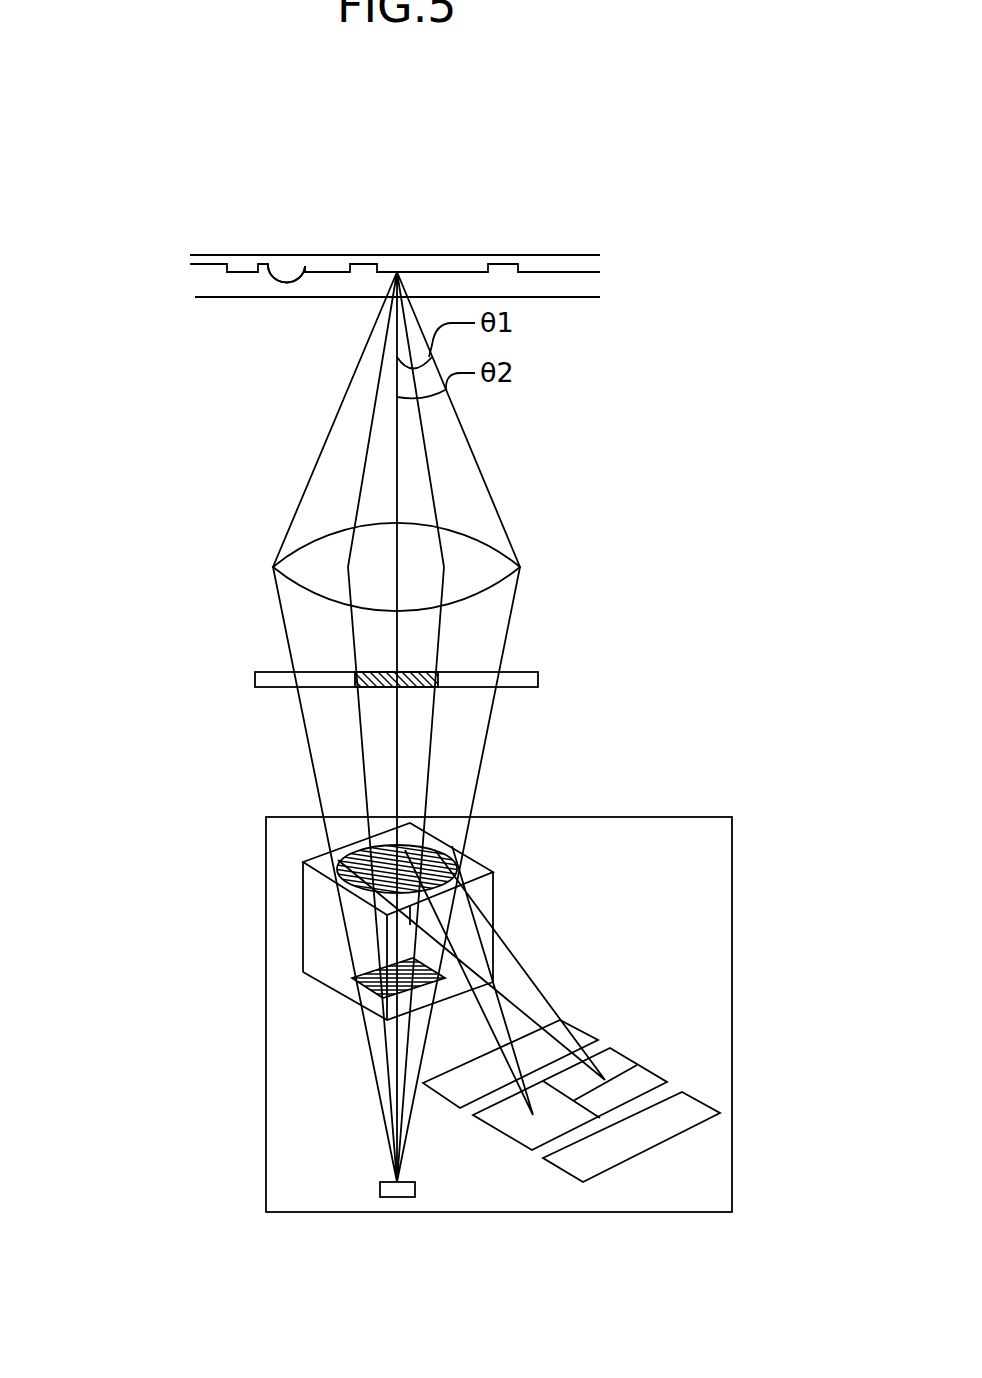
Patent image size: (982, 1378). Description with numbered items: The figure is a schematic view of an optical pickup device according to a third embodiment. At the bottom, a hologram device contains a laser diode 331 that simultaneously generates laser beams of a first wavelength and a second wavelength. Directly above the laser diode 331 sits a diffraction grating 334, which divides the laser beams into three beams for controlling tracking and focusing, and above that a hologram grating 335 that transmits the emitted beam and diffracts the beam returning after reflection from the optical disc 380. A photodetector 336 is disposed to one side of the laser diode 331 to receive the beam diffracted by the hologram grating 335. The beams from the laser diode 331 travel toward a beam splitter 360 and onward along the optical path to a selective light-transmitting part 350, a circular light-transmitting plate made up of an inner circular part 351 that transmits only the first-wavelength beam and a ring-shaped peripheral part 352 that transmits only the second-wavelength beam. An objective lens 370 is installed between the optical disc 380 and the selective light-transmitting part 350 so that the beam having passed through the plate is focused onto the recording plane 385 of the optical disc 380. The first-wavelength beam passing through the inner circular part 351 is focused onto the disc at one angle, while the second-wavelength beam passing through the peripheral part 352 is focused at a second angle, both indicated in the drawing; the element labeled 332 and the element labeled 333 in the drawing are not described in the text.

The laser diode 331 is at (388, 1200).
The optical module 332 is at (438, 968).
The beam splitter 333 is at (370, 947).
The diffraction grating 334 is at (352, 980).
The hologram grating 335 is at (340, 857).
The photodetector 336 is at (717, 1093).
The selective light-transmitting part 350 is at (431, 649).
The inner circular part 351 is at (387, 674).
The peripheral part 352 is at (272, 676).
The beam splitter 360 is at (737, 982).
The objective lens 370 is at (318, 560).
The optical disc 380 is at (213, 277).
The recording plane 385 is at (305, 272).